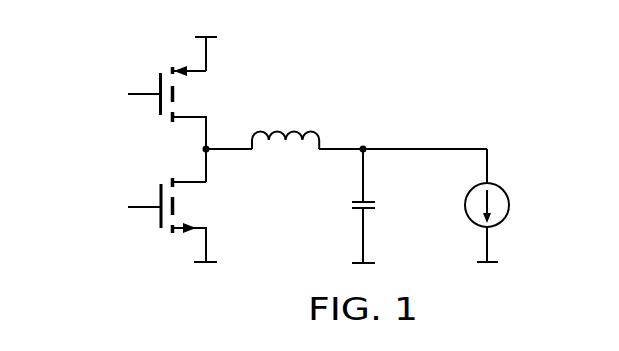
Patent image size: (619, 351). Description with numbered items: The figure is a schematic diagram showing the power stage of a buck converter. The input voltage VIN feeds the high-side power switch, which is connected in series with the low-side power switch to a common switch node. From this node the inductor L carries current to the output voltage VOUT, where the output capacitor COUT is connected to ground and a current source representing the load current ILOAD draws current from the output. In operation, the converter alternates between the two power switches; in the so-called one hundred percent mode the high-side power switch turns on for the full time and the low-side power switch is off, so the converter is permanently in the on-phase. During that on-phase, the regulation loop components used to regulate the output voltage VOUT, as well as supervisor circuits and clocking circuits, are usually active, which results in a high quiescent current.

The input voltage VIN is at (206, 41).
The inductor L is at (285, 128).
The output voltage VOUT is at (426, 135).
The output capacitor COUT is at (393, 206).
The load current ILOAD is at (523, 205).